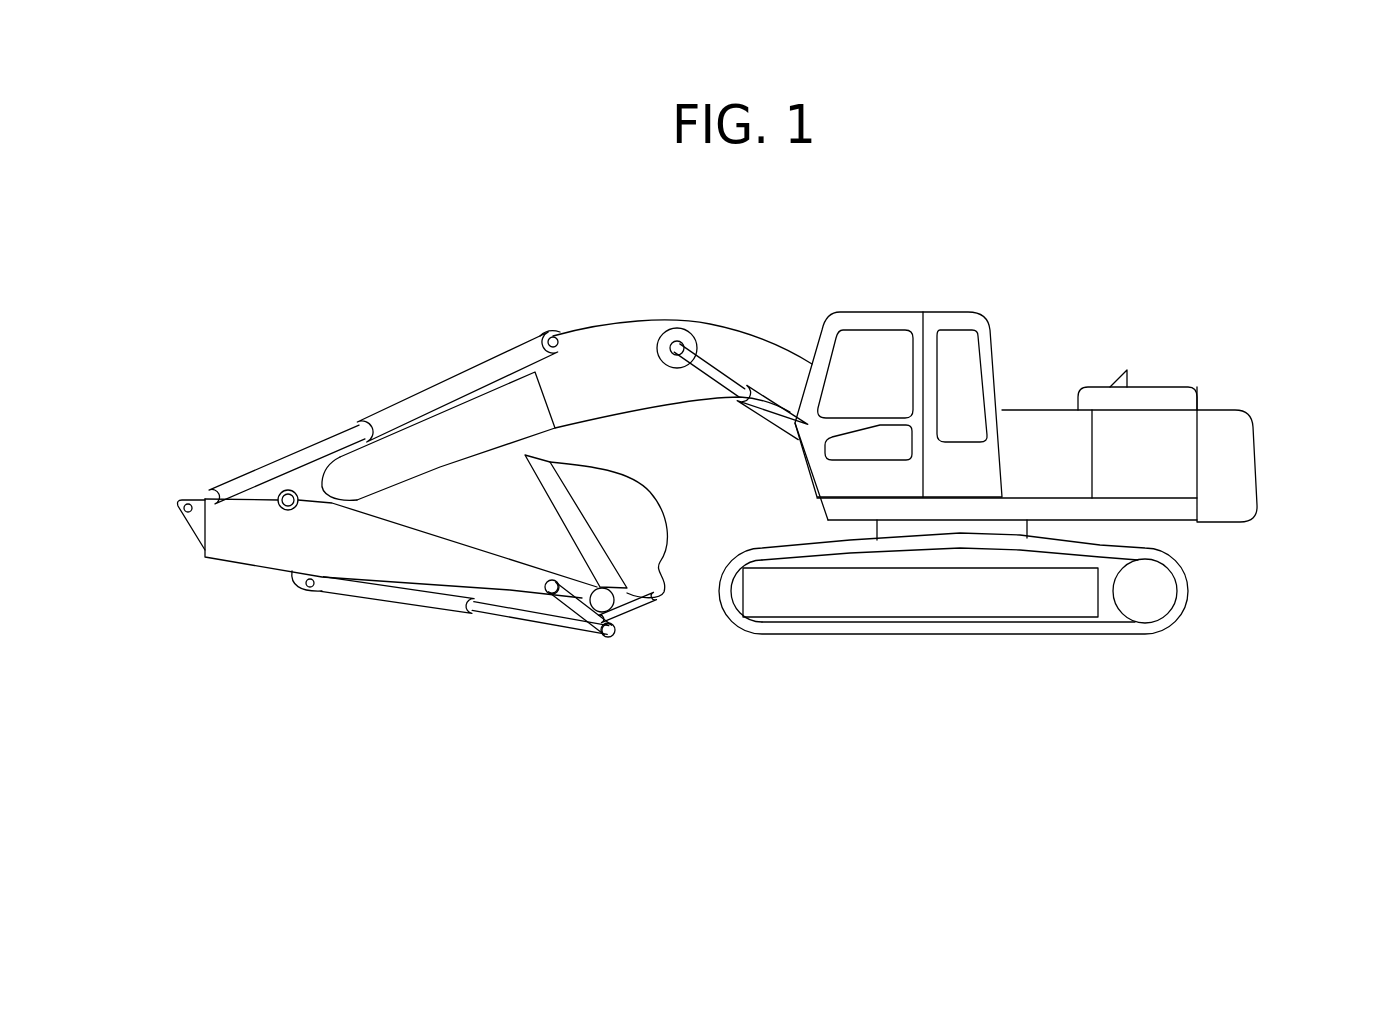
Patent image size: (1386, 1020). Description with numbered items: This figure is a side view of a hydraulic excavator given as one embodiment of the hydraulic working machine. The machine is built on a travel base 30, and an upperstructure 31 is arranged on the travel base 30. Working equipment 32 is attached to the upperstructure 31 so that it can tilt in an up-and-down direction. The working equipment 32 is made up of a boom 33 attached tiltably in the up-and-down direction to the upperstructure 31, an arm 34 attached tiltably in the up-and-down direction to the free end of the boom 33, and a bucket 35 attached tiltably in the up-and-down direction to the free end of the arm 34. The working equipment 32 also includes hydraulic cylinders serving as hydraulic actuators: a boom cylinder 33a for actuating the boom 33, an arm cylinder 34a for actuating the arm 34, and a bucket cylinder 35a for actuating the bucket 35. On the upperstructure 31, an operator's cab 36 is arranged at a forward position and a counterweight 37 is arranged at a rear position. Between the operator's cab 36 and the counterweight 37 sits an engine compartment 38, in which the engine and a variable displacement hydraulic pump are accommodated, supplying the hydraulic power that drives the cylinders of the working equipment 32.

The travel base 30 is at (953, 635).
The upperstructure 31 is at (1000, 352).
The working equipment 32 is at (743, 327).
The boom 33 is at (638, 325).
The boom cylinder 33a is at (740, 408).
The arm 34 is at (418, 585).
The arm cylinder 34a is at (433, 382).
The bucket 35 is at (670, 520).
The bucket cylinder 35a is at (470, 598).
The operator's cab 36 is at (900, 312).
The counterweight 37 is at (1233, 408).
The engine compartment 38 is at (1145, 387).